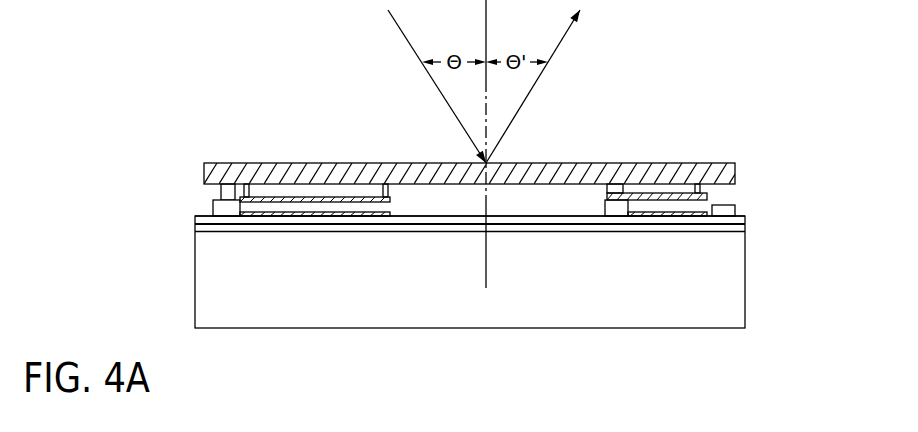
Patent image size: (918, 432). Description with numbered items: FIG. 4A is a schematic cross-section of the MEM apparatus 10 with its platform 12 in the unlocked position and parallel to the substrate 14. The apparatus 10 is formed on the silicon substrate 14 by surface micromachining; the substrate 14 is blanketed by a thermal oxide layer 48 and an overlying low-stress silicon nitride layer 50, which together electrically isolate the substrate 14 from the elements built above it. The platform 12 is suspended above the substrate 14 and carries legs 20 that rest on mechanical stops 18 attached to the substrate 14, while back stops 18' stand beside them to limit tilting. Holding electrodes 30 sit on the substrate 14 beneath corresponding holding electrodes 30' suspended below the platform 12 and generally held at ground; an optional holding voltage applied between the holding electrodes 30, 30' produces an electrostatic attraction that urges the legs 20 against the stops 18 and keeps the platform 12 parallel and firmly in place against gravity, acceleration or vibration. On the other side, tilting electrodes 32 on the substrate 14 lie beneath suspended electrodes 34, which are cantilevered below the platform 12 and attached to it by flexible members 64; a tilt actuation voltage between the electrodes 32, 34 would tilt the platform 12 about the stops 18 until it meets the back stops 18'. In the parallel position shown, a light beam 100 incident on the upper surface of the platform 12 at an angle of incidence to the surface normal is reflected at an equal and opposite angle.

The MEM apparatus 10 is at (683, 350).
The platform 12 is at (386, 163).
The substrate 14 is at (680, 296).
The mechanical stop 18 is at (383, 223).
The back stop 18' is at (758, 208).
The leg 20 is at (221, 193).
The holding electrode 30 is at (315, 239).
The holding electrode 30' is at (340, 197).
The tilting electrode 32 is at (650, 217).
The suspended electrode 34 is at (606, 197).
The thermal oxide layer 48 is at (197, 227).
The silicon nitride layer 50 is at (195, 217).
The flexible member 64 is at (702, 188).
The light beam 100 is at (423, 66).